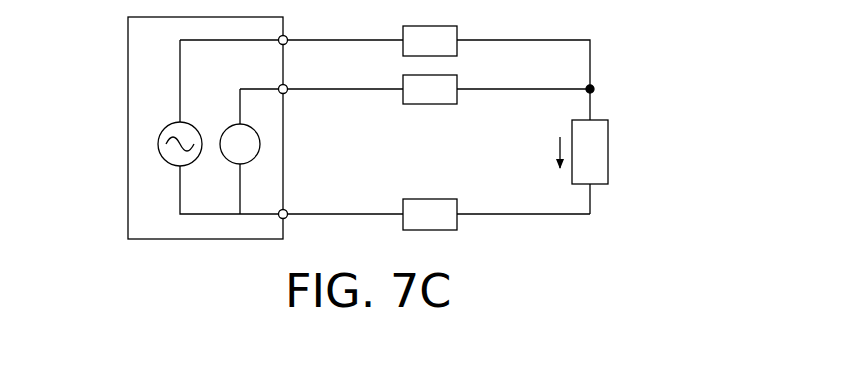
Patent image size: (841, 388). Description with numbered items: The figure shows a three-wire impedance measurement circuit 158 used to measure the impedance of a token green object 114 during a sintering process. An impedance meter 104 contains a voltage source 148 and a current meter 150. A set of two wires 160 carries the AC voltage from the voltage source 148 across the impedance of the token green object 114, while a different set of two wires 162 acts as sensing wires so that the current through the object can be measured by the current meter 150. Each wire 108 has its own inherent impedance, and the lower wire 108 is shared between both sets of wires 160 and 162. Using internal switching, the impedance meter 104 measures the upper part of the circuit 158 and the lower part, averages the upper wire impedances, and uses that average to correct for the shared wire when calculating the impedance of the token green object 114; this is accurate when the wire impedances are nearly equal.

The 3-wire impedance measurement circuit 158 is at (172, 133).
The impedance meter 104 is at (128, 230).
The voltage source 148 is at (177, 167).
The current meter 150 is at (237, 166).
The wire 108 is at (352, 40).
The set of two wires (sensing wires) 162 is at (485, 89).
The set of two wires 160 is at (553, 40).
The token green object 114 is at (614, 123).